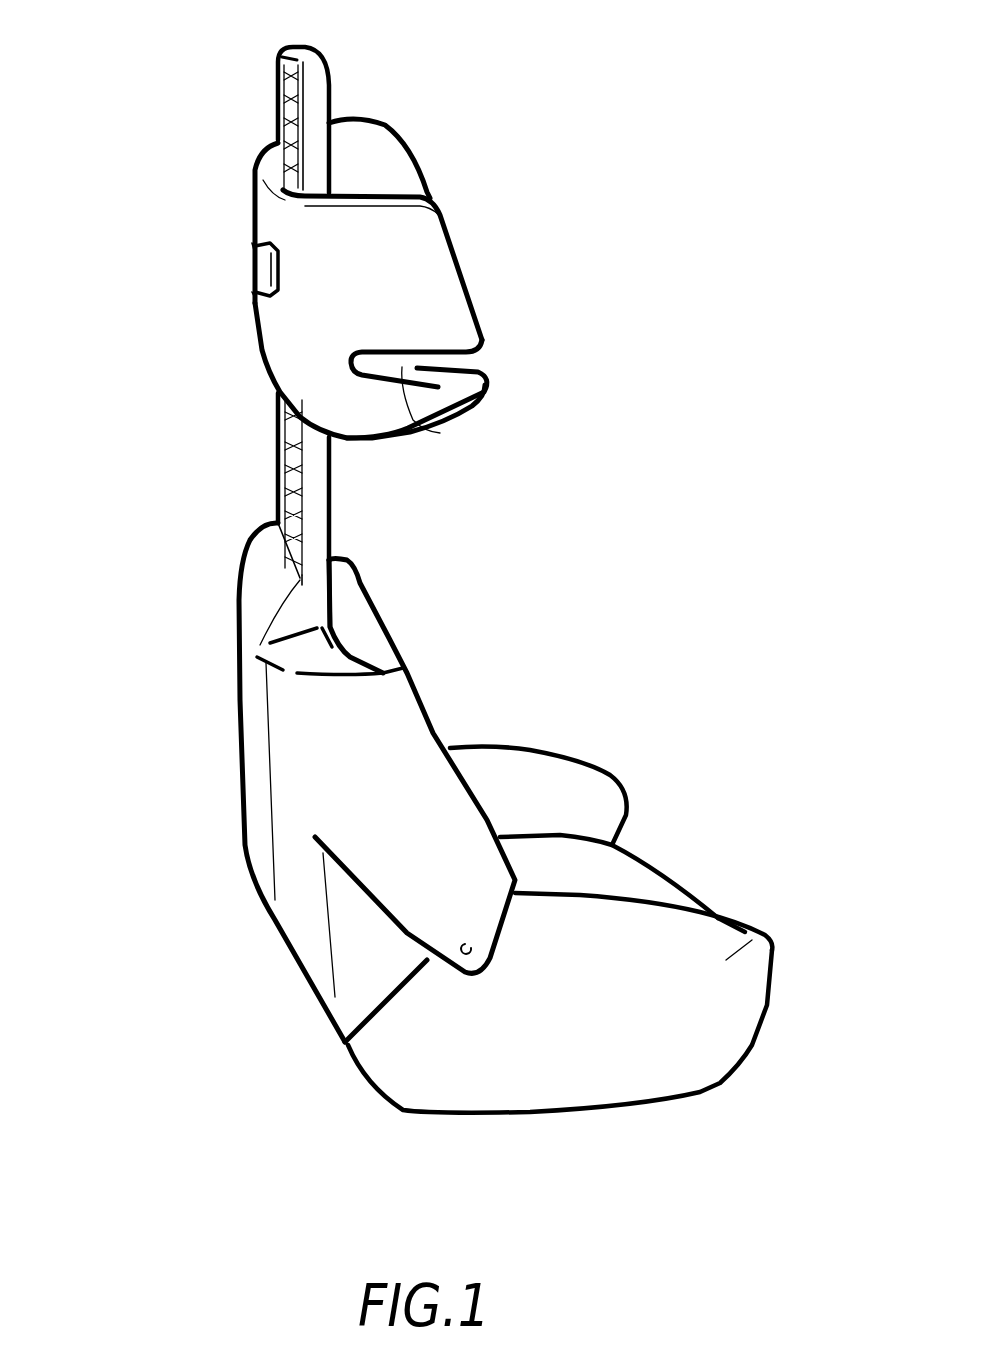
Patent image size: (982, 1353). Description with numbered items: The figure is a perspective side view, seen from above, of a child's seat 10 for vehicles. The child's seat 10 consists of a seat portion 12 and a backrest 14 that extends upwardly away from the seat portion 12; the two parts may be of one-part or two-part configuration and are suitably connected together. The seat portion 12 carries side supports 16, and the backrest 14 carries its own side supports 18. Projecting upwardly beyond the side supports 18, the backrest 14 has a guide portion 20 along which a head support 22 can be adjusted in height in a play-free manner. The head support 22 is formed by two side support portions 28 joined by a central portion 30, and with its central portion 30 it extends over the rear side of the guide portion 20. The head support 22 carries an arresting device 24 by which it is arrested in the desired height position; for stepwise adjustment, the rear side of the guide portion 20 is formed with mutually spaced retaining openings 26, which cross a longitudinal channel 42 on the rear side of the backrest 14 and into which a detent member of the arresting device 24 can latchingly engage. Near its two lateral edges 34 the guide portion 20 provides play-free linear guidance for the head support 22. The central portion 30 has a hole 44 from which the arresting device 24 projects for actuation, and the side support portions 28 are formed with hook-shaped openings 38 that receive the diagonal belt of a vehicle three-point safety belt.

The child's seat 10 is at (658, 463).
The seat portion 12 is at (660, 893).
The backrest 14 is at (253, 660).
The side supports 16 is at (587, 788).
The side supports 18 is at (355, 608).
The guide portion 20 is at (315, 102).
The head support 22 is at (488, 258).
The arresting device 24 is at (264, 259).
The retaining openings 26 is at (278, 127).
The side support portions 28 is at (388, 165).
The central portion 30 is at (275, 320).
The lateral edges 34 is at (316, 512).
The hook-shaped openings 38 is at (440, 433).
The longitudinal channel 42 is at (330, 464).
The hole 44 is at (253, 245).